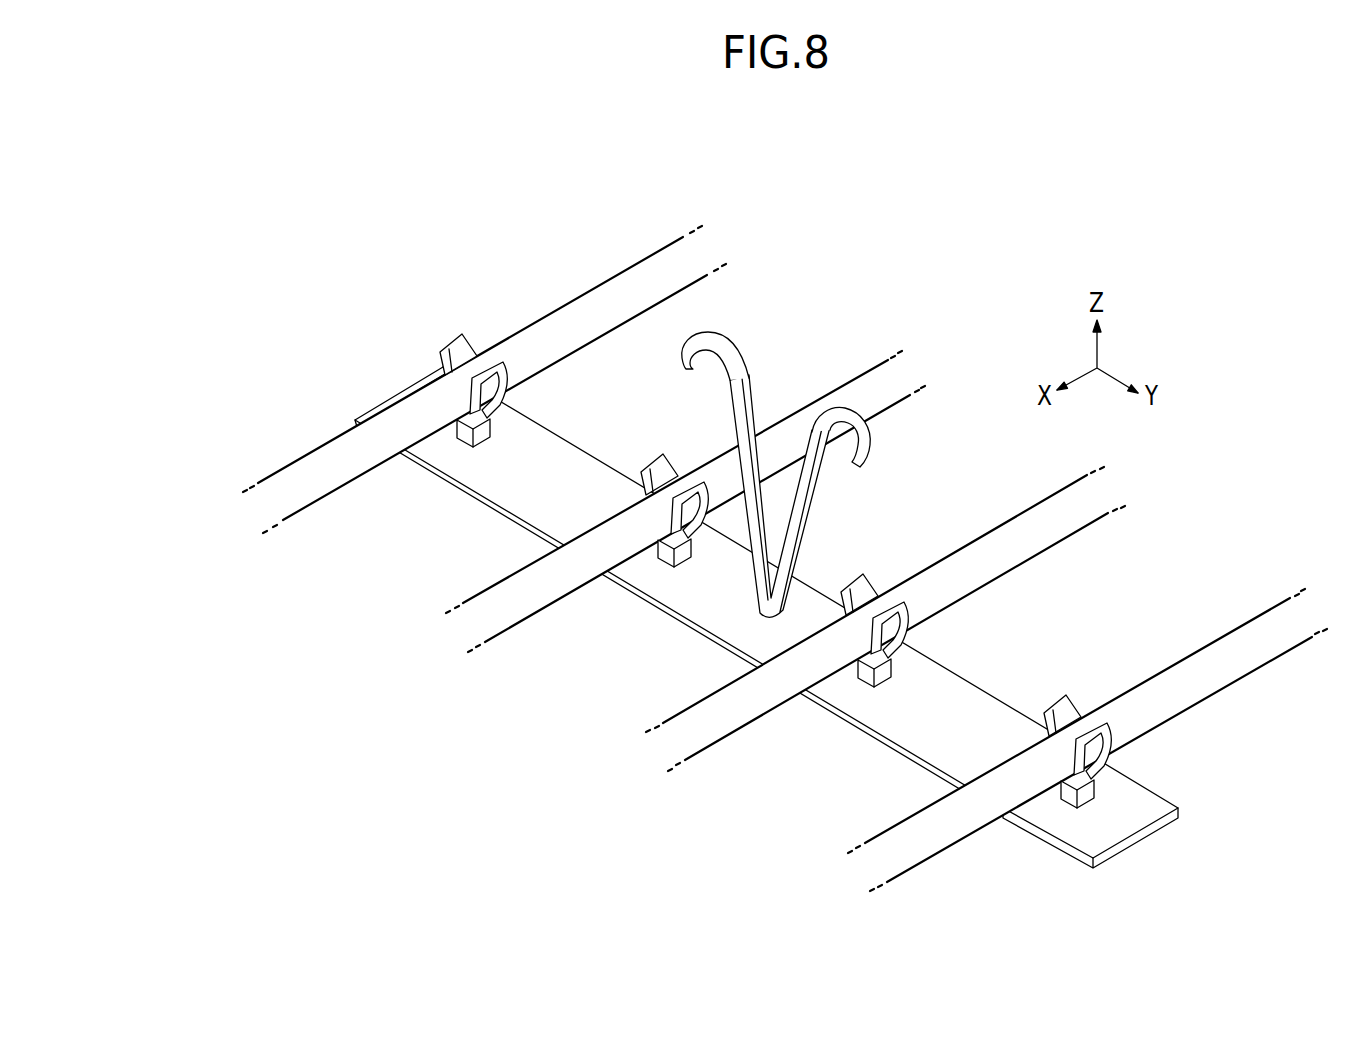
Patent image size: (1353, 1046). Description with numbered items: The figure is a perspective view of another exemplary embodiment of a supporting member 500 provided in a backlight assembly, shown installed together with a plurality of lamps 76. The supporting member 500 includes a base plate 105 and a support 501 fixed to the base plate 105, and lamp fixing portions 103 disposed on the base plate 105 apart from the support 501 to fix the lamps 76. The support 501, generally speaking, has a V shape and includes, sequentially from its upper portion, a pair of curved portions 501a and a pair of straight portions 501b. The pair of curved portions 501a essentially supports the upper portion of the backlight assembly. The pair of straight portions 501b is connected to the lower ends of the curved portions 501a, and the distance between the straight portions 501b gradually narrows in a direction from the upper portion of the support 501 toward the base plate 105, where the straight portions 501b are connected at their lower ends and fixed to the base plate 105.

The lamp 76 is at (1245, 667).
The lamp fixing portion 103 is at (1068, 788).
The base plate 105 is at (1138, 804).
The supporting member 500 is at (860, 546).
The support 501 is at (801, 450).
The curved portion 501a is at (717, 341).
The straight portion 501b is at (727, 407).